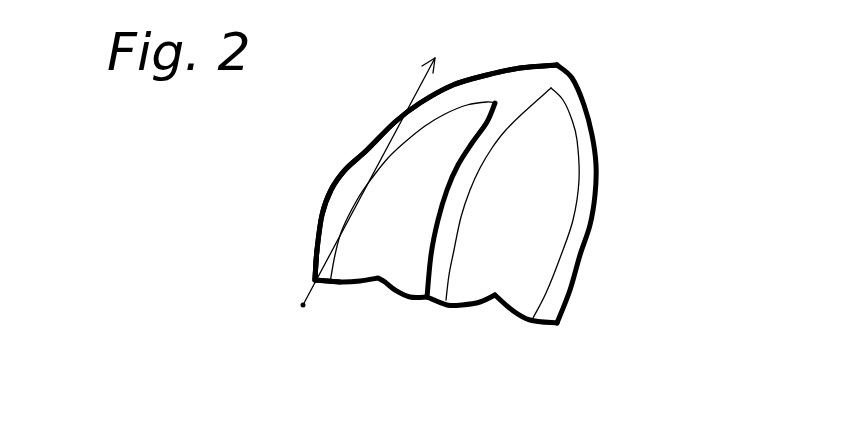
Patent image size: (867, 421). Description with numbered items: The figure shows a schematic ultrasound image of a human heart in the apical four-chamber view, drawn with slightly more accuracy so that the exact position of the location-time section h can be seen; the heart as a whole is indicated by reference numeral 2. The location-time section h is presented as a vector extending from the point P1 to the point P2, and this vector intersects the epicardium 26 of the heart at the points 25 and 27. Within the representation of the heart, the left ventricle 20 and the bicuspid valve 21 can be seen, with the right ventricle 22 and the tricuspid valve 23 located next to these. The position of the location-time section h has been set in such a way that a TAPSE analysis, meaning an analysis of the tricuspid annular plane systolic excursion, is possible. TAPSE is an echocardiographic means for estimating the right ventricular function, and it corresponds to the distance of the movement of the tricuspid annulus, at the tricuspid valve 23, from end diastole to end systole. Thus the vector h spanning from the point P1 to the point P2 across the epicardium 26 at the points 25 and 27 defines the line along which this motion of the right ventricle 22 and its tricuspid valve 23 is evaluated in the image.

The tooth 2 is at (678, 98).
The left ventricle 20 is at (530, 203).
The bicuspid valve 21 is at (522, 320).
The right ventricle 22 is at (400, 213).
The tricuspid valve 23 is at (387, 292).
The intersection point 25 is at (400, 115).
The epicardium 26 is at (343, 177).
The intersection point 27 is at (313, 283).
The point P1 is at (303, 305).
The point P2 is at (433, 57).
The location-time section h is at (379, 169).